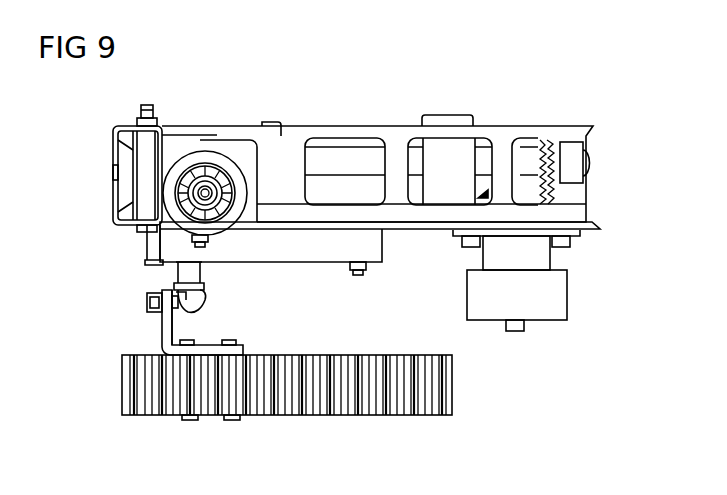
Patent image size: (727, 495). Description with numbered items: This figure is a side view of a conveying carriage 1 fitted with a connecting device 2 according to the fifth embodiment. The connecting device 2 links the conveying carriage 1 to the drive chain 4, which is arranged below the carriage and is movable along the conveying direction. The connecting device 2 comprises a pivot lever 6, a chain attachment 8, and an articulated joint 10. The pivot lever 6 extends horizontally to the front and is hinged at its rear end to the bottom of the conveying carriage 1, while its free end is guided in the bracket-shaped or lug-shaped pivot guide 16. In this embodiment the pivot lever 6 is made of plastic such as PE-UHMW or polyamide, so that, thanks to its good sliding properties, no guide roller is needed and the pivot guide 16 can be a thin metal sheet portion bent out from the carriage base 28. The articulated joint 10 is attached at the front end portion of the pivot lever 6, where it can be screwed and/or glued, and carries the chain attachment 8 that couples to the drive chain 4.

The conveying carriage 1 is at (322, 94).
The connecting device 2 is at (124, 294).
The drive chain 4 is at (356, 412).
The pivot lever 6 is at (302, 262).
The chain attachment 8 is at (160, 344).
The articulated joint 10 is at (276, 277).
The pivot guide 16 is at (148, 258).
The carriage base 28 is at (582, 214).